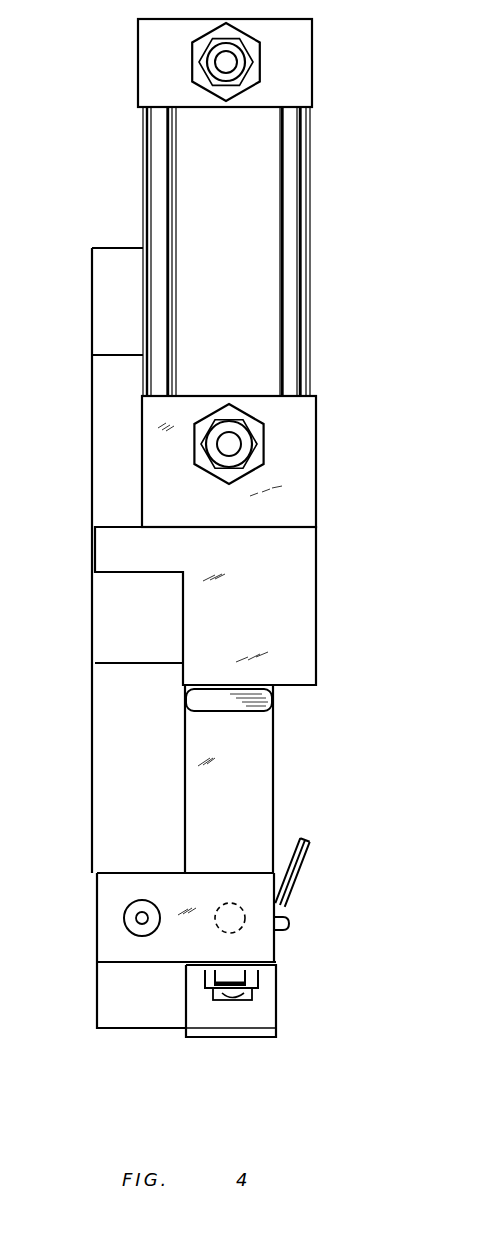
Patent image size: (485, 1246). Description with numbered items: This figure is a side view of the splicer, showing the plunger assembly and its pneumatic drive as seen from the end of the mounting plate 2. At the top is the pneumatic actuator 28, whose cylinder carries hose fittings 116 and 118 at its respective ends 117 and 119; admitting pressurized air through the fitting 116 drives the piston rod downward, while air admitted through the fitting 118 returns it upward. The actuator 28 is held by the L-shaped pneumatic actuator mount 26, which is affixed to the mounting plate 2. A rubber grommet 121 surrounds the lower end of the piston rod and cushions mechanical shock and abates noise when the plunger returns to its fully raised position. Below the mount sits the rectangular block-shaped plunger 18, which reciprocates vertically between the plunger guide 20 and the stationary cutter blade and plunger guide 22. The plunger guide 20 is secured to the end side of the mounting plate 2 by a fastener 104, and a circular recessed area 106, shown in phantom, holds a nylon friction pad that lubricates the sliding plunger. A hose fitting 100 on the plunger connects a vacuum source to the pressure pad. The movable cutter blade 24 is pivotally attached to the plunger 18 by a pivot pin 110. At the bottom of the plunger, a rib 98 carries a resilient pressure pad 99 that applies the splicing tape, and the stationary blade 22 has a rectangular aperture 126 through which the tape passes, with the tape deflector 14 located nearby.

The mounting plate 2 is at (92, 355).
The tape deflector 14 is at (275, 1033).
The plunger 18 is at (244, 807).
The plunger guide 20 is at (115, 937).
The stationary cutter blade and plunger guide 22 is at (268, 1007).
The movable cutter blade 24 is at (255, 980).
The pneumatic actuator mount 26 is at (258, 617).
The pneumatic actuator 28 is at (239, 227).
The rib 98 is at (222, 980).
The resilient pressure pad 99 is at (212, 994).
The hose fitting 100 is at (308, 852).
The fastener 104 is at (136, 918).
The circular recessed area 106 is at (243, 928).
The pivot pin 110 is at (282, 912).
The hose fitting 116 is at (218, 60).
The end of the actuator cylinder 117 is at (300, 32).
The hose fitting 118 is at (228, 447).
The end of the actuator cylinder 119 is at (308, 502).
The rubber grommet 121 is at (275, 700).
The rectangular aperture 126 is at (236, 997).